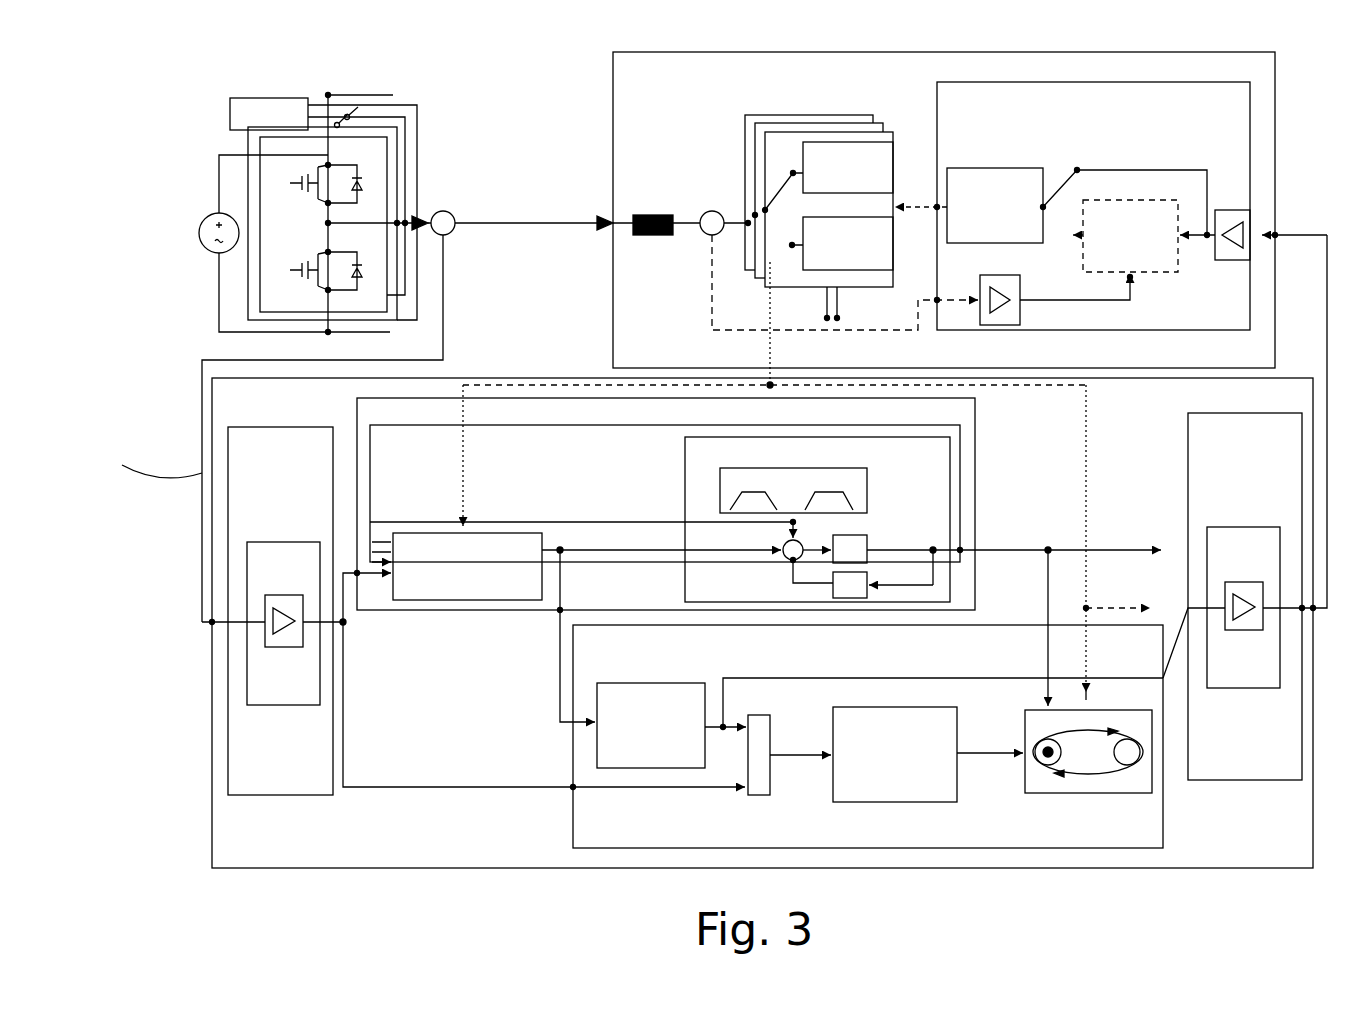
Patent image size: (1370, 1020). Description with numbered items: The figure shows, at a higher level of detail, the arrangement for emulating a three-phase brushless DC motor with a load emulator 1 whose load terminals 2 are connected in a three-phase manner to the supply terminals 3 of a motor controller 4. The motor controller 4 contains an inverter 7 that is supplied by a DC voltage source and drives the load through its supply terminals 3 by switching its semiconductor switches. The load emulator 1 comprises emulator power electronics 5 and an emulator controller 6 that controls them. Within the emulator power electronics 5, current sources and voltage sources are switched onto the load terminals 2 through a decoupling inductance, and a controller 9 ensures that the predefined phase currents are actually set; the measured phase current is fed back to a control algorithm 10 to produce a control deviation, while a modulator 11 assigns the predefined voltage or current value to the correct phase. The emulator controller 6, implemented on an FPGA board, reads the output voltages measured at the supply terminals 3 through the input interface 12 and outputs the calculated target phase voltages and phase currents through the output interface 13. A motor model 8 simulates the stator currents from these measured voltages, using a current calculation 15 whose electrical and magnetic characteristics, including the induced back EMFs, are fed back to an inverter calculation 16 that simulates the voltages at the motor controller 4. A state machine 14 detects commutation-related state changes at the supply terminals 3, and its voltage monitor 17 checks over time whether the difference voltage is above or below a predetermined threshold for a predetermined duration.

The load emulator 1 is at (583, 285).
The load terminals 2 is at (607, 220).
The supply terminals 3 is at (420, 208).
The motor controller 4 is at (185, 128).
The emulator power electronics 5 is at (1253, 68).
The emulator controller 6 is at (694, 623).
The inverter 7 is at (336, 214).
The motor model 8 is at (758, 560).
The controller 9 is at (1093, 206).
The control algorithm 10 is at (1130, 236).
The modulator 11 is at (995, 205).
The input interface 12 is at (473, 611).
The output interface 13 is at (1232, 596).
The state machine 14 is at (868, 699).
The current calculation 15 is at (817, 519).
The inverter calculation 16 is at (467, 566).
The voltage monitor 17 is at (895, 754).